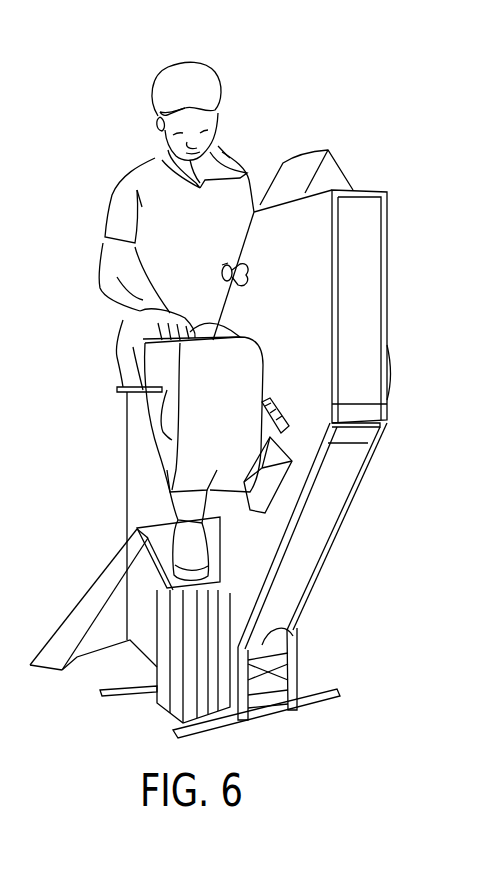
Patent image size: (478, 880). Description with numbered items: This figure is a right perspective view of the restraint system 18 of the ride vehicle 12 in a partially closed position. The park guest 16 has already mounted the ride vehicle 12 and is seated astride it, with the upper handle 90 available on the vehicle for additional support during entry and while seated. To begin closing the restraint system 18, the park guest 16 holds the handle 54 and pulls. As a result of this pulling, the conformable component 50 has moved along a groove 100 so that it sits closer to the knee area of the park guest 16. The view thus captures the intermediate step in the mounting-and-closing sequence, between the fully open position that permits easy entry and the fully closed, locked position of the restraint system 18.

The ride vehicle 12 is at (368, 290).
The park guest 16 is at (146, 164).
The restraint system 18 is at (280, 355).
The conformable component 50 is at (172, 440).
The handle 54 is at (208, 337).
The upper handle 90 is at (248, 270).
The groove 100 is at (283, 425).